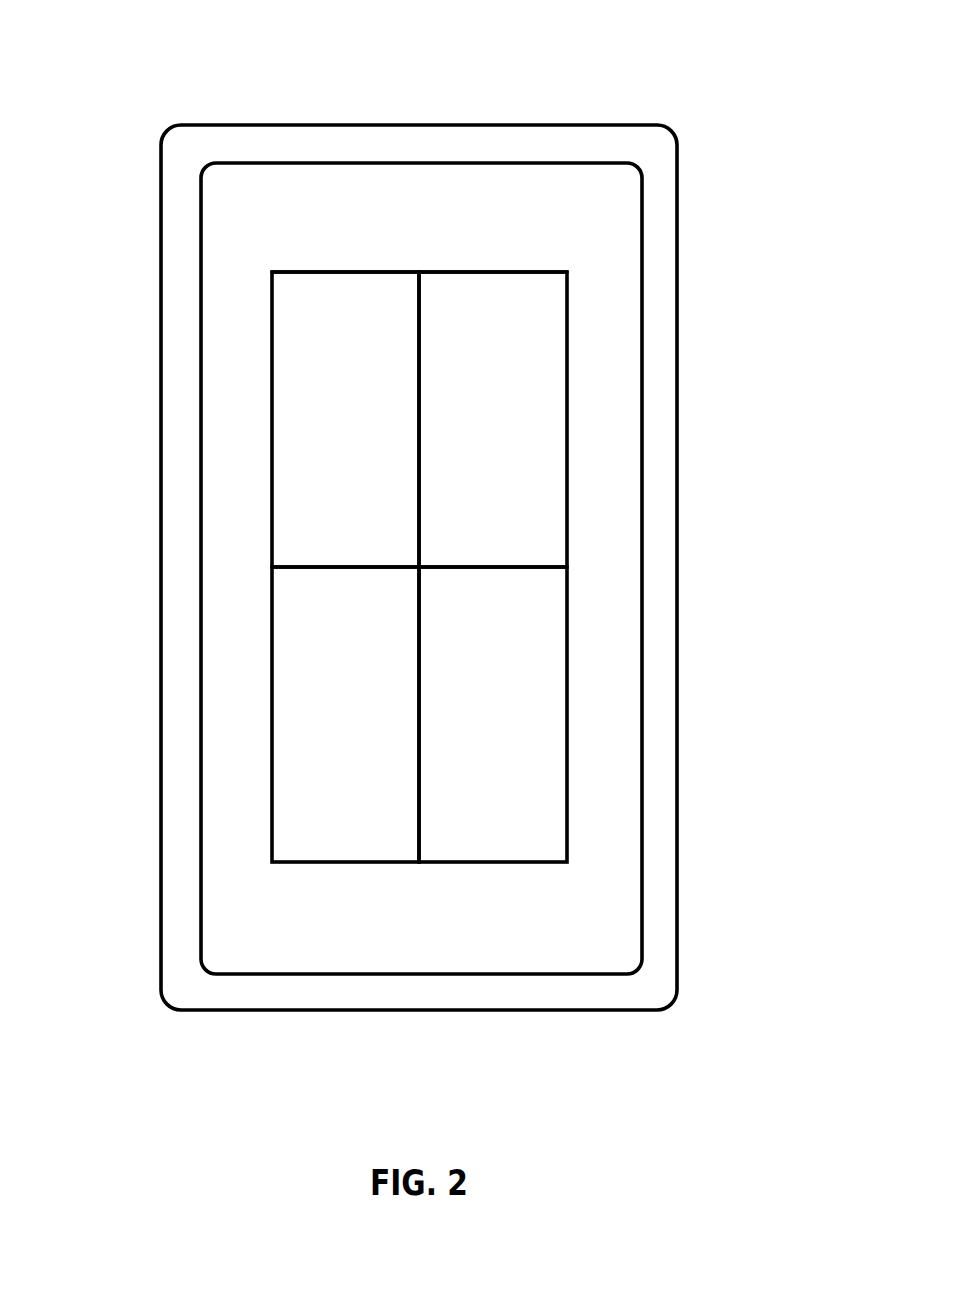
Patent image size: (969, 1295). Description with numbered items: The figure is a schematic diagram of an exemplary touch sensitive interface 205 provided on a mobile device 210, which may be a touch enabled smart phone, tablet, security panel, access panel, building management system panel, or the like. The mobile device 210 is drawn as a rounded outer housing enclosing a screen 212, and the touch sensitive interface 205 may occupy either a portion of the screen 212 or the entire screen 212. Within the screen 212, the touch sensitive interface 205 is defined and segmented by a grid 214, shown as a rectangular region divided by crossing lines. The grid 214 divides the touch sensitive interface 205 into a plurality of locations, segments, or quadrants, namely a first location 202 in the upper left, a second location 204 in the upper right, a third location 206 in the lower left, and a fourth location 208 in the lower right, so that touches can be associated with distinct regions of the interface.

The first location 202 is at (327, 422).
The second location 204 is at (492, 420).
The touch sensitive interface 205 is at (327, 272).
The third location 206 is at (318, 714).
The fourth location 208 is at (519, 715).
The mobile device 210 is at (677, 162).
The screen 212 is at (557, 917).
The grid 214 is at (490, 272).